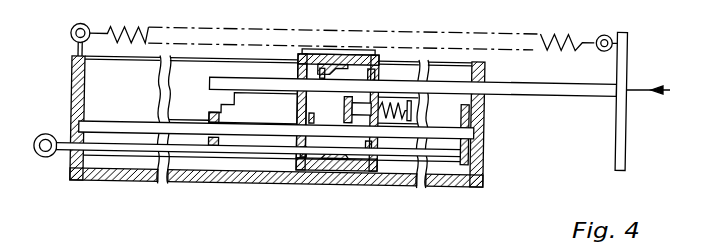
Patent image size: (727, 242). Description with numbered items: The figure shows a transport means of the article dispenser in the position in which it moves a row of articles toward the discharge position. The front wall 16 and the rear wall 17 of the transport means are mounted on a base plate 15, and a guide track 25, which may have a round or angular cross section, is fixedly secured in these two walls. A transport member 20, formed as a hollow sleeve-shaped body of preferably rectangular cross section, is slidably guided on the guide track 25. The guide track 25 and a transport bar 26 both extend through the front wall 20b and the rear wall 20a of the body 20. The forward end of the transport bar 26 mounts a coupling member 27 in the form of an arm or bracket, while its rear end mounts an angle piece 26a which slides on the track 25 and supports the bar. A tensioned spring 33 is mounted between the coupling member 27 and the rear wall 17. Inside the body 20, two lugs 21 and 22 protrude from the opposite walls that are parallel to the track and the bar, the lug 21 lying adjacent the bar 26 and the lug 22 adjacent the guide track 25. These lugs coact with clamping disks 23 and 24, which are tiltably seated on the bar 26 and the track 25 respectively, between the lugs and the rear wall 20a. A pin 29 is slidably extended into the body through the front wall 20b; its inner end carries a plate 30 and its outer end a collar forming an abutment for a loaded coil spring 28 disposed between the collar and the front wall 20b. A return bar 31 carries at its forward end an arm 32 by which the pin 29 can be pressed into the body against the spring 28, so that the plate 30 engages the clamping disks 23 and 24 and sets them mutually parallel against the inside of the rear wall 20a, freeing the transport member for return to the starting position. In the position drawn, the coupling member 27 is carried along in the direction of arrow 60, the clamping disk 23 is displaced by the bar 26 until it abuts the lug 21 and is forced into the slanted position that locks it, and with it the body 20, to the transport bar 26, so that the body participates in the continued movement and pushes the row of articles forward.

The base plate 15 is at (248, 176).
The front wall 16 is at (482, 149).
The rear wall 17 is at (72, 80).
The transport member 20 is at (312, 150).
The rear wall of body 20a is at (300, 72).
The front wall of body 20b is at (383, 62).
The lug 21 is at (340, 62).
The lug 22 is at (334, 166).
The clamping disk 23 is at (318, 56).
The clamping disk 24 is at (307, 165).
The guide track 25 is at (182, 132).
The transport bar 26 is at (556, 93).
The angle piece 26a is at (213, 145).
The coupling member 27 is at (622, 137).
The coil spring 28 is at (398, 120).
The pin 29 is at (408, 100).
The plate 30 is at (352, 118).
The return bar 31 is at (66, 151).
The arm 32 is at (463, 160).
The tensioned spring 33 is at (568, 36).
The arrow 60 is at (657, 88).